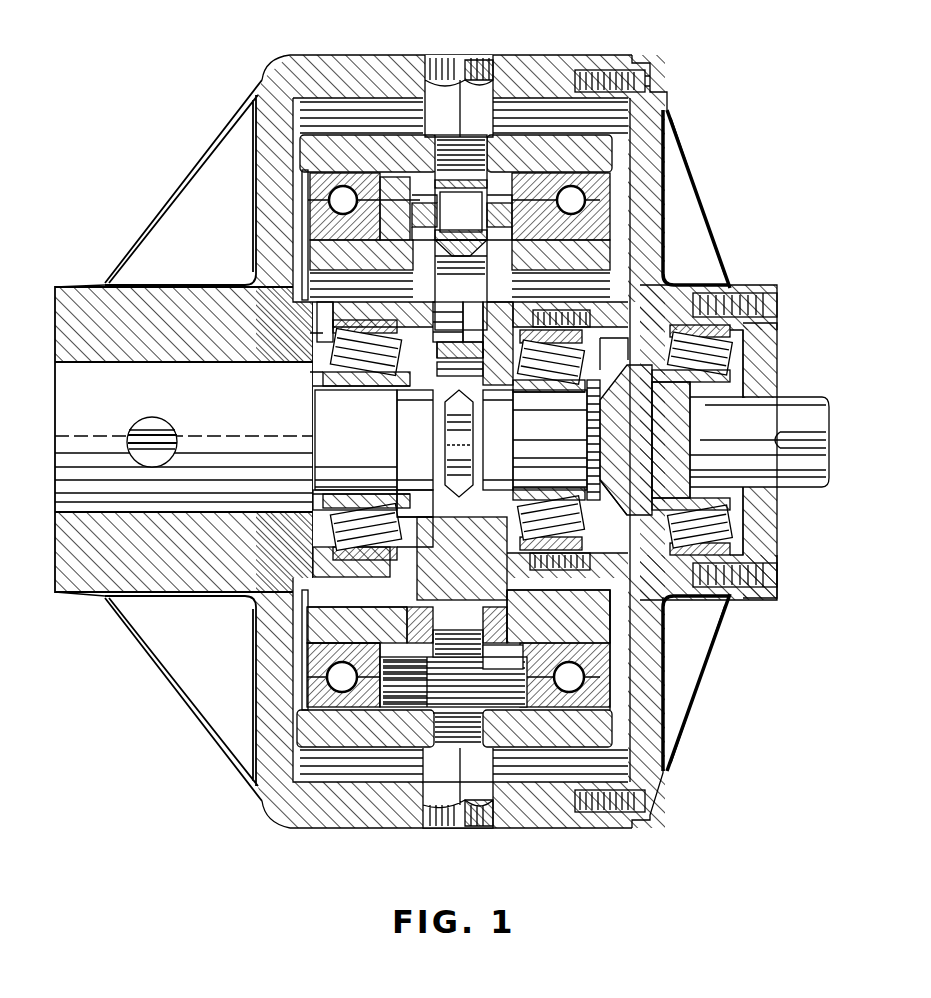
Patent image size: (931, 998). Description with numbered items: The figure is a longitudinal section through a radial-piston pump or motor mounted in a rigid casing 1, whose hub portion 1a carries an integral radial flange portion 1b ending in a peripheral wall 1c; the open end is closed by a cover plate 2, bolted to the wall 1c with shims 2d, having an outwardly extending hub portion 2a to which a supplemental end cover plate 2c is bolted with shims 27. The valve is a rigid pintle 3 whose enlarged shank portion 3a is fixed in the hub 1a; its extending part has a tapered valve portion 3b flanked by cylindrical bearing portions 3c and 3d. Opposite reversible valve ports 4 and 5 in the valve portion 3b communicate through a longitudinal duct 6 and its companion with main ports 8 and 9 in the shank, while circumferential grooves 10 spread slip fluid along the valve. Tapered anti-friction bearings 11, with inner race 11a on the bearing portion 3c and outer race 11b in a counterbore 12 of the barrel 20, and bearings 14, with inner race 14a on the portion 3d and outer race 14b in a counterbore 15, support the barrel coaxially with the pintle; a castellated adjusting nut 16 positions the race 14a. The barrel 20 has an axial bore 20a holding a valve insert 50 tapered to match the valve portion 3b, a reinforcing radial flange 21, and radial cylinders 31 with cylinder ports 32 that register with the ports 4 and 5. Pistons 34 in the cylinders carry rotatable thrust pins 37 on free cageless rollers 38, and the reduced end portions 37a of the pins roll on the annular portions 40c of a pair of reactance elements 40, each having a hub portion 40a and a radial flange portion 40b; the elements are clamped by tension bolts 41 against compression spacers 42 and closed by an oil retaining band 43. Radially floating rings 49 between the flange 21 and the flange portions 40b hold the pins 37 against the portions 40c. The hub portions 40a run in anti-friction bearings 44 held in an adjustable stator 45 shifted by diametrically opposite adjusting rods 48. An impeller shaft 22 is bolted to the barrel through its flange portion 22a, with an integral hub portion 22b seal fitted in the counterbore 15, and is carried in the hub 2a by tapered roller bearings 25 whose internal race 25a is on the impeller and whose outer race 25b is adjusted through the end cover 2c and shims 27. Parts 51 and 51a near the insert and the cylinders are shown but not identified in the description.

The casing 1 is at (272, 80).
The hub portion 1a is at (90, 287).
The radial flange portion 1b is at (247, 157).
The peripheral wall 1c is at (362, 68).
The cover plate 2 is at (668, 94).
The hub portion 2a is at (700, 292).
The supplemental end cover plate 2c is at (765, 332).
The shims 2d is at (638, 66).
The pintle 3 is at (385, 425).
The shank portion 3a is at (262, 412).
The valve portion 3b is at (522, 418).
The bearing portion 3c is at (385, 400).
The bearing portion 3d is at (540, 436).
The valve port 4 is at (447, 428).
The valve port 5 is at (446, 437).
The longitudinal duct 6 is at (138, 428).
The main port 8 is at (140, 425).
The main port 9 is at (170, 420).
The circumferential grooves 10 is at (432, 412).
The tapered anti-friction bearings 11 is at (366, 440).
The inner race 11a is at (320, 385).
The outer race 11b is at (322, 360).
The counterbore 12 is at (348, 492).
The tapered anti-friction bearings 14 is at (549, 440).
The inner race 14a is at (540, 394).
The outer race 14b is at (665, 285).
The counterbore 15 is at (528, 316).
The castellated adjusting nut 16 is at (588, 402).
The barrel 20 is at (530, 600).
The axial bore 20a is at (518, 463).
The reinforcing radial flange 21 is at (508, 610).
The impeller shaft 22 is at (725, 428).
The flange portion 22a is at (625, 520).
The shaft shoulder 22b is at (629, 519).
The tapered anti-friction roller bearings 25 is at (692, 440).
The internal race 25a is at (706, 383).
The outer race 25b is at (748, 334).
The shims 27 is at (760, 300).
The radial cylinders 31 is at (452, 350).
The cylinder port 32 is at (455, 370).
The pistons 34 is at (458, 310).
The thrust pins 37 is at (460, 228).
The reduced outer end portions 37a is at (461, 217).
The free cageless rollers 38 is at (441, 198).
The reactance elements 40 is at (570, 622).
The hub portion 40a is at (346, 628).
The radial flange portion 40b is at (398, 640).
The annular axially extending portion 40c is at (432, 690).
The tension bolts 41 is at (512, 700).
The compression spacers 42 is at (498, 708).
The oil retaining band 43 is at (440, 705).
The anti-friction bearings 44 is at (456, 440).
The adjustable stator 45 is at (326, 744).
The adjusting rods 48 is at (470, 72).
The radially floating rings 49 is at (457, 625).
The valve insert 50 is at (405, 492).
The retaining ring 51 is at (402, 520).
The retaining ring 51a is at (459, 323).